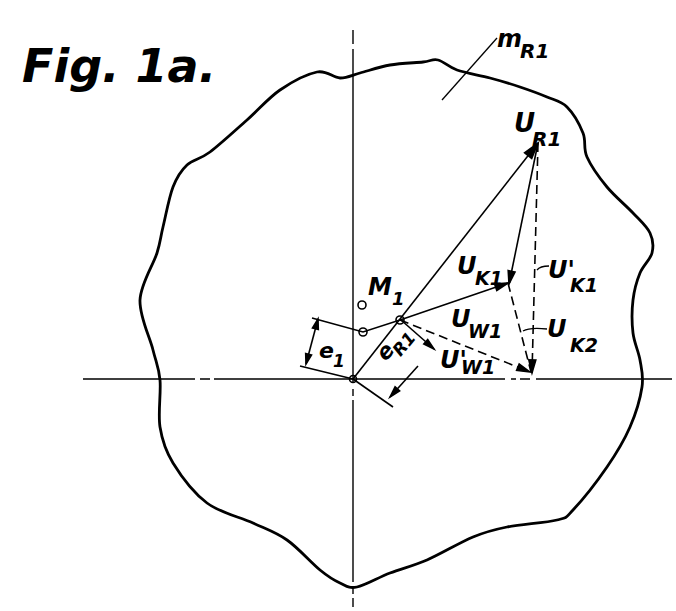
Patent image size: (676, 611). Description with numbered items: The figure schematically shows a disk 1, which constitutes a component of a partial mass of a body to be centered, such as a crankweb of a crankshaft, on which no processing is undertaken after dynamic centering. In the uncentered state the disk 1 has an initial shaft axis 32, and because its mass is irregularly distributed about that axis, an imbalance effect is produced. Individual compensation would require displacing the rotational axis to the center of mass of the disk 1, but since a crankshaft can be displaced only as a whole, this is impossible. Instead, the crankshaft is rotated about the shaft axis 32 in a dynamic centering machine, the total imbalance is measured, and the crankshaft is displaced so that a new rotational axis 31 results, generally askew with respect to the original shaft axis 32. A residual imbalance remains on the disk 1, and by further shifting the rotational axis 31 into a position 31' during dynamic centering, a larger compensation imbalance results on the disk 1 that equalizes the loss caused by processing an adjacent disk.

The disk 1 is at (193, 223).
The new rotational axis 31 is at (328, 310).
The shifted position of rotational axis 31' is at (336, 282).
The initial shaft axis 32 is at (353, 379).